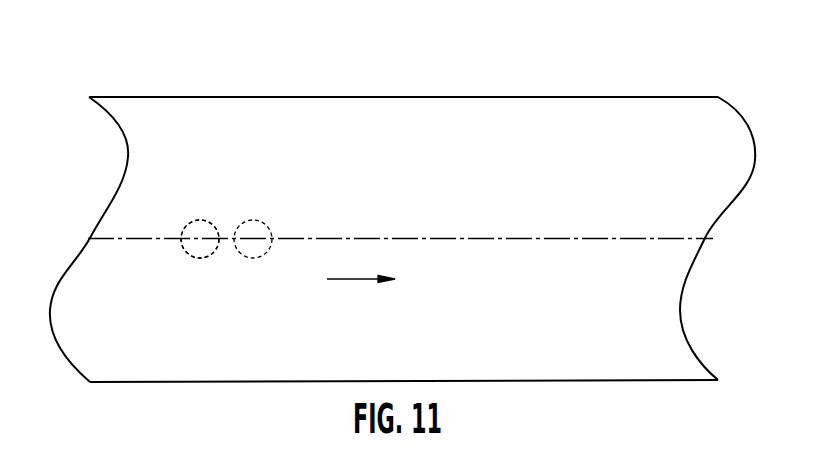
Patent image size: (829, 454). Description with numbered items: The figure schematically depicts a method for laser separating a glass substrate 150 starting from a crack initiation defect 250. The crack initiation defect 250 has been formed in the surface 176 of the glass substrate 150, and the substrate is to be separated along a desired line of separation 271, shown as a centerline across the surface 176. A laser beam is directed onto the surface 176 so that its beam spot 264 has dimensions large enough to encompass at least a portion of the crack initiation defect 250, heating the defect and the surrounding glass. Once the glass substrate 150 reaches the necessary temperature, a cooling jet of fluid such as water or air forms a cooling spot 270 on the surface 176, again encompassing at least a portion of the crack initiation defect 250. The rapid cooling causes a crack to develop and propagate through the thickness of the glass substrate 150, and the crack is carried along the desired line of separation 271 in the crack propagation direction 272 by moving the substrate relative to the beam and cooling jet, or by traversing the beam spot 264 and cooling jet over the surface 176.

The glass substrate 150 is at (643, 103).
The surface 176 is at (494, 153).
The desired line of separation 271 is at (497, 238).
The crack initiation defect 250 is at (157, 237).
The cooling spot 270 is at (210, 222).
The beam spot 264 is at (273, 222).
The crack propagation direction 272 is at (357, 280).